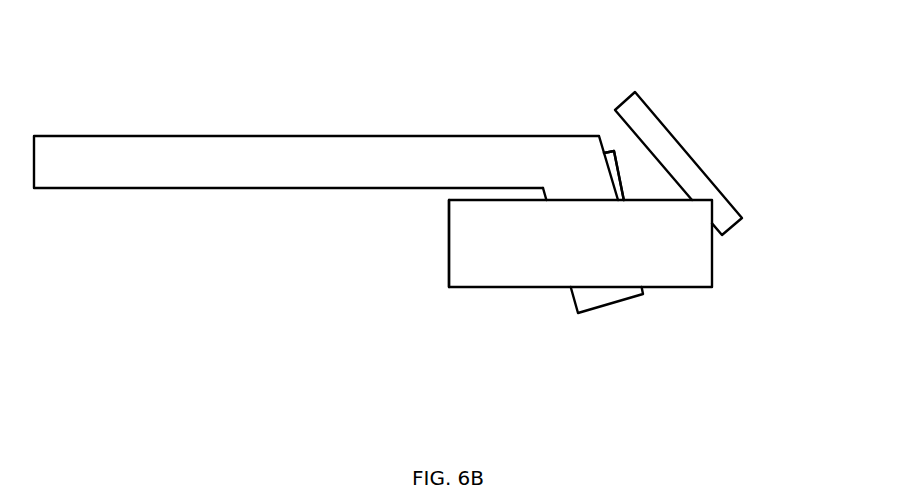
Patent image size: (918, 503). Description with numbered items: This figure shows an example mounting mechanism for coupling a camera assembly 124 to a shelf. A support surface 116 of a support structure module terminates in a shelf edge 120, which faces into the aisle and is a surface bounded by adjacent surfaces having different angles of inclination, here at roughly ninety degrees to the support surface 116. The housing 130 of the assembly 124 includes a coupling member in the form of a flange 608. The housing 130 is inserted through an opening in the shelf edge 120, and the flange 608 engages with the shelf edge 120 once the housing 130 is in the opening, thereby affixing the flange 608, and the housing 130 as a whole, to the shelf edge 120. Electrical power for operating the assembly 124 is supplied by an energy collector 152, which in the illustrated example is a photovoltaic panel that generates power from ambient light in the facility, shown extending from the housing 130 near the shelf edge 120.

The support surface 116 is at (247, 135).
The shelf edge 120 is at (604, 146).
The assembly 124 is at (427, 282).
The housing 130 is at (517, 288).
The energy collector 152 is at (736, 226).
The flange 608 is at (622, 184).